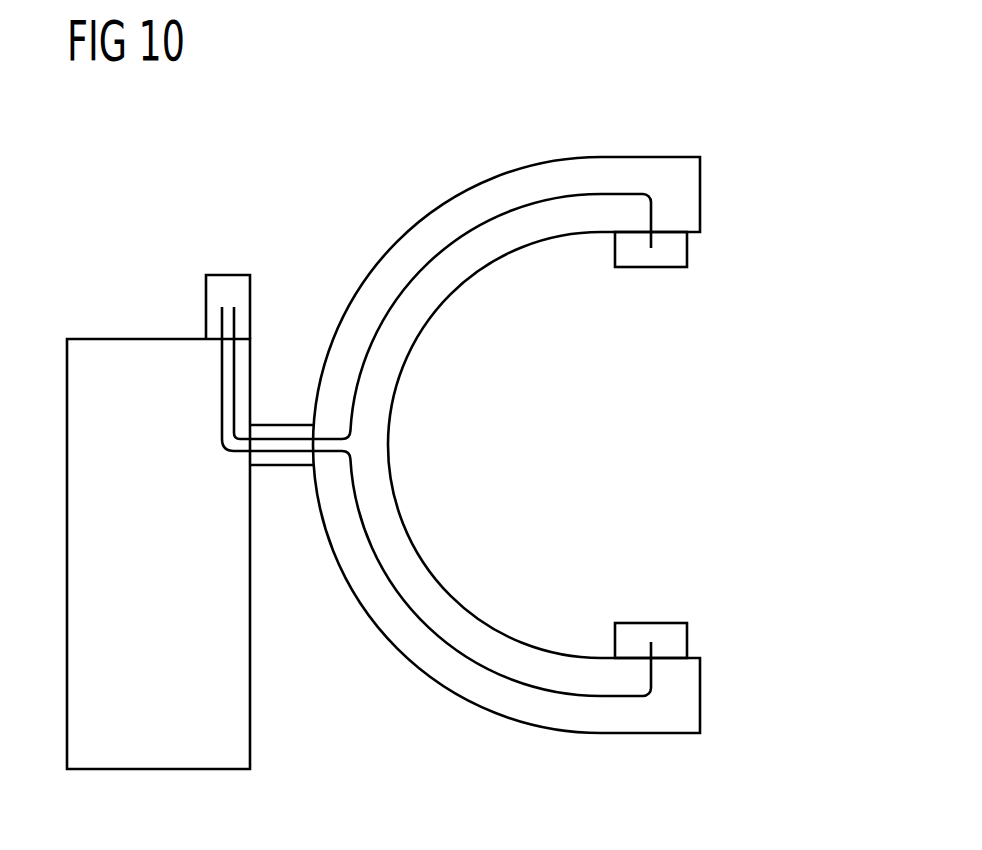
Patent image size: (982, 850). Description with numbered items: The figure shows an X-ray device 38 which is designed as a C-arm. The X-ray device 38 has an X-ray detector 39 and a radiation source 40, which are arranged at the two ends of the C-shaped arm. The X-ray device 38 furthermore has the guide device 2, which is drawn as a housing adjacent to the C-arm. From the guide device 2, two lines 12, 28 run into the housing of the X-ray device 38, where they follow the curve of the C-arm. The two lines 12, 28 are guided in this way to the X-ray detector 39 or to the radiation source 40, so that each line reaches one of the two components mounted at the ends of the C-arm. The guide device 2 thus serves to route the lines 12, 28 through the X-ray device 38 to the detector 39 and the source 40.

The guide device 2 is at (249, 246).
The line 12 is at (483, 665).
The line 28 is at (483, 220).
The X-ray device 38 is at (697, 108).
The X-ray detector 39 is at (678, 248).
The radiation source 40 is at (678, 640).